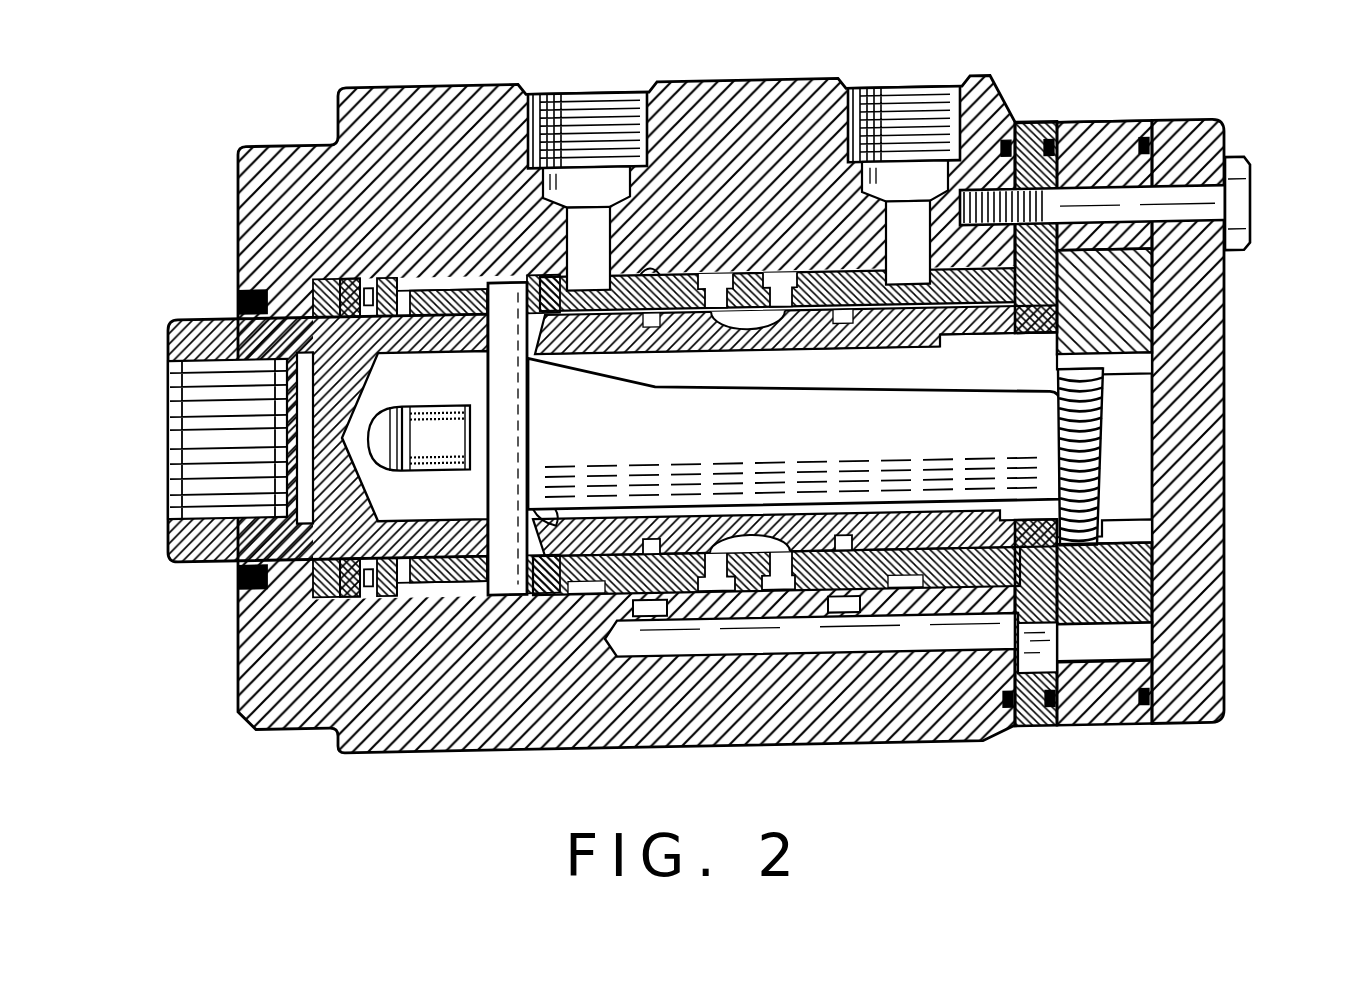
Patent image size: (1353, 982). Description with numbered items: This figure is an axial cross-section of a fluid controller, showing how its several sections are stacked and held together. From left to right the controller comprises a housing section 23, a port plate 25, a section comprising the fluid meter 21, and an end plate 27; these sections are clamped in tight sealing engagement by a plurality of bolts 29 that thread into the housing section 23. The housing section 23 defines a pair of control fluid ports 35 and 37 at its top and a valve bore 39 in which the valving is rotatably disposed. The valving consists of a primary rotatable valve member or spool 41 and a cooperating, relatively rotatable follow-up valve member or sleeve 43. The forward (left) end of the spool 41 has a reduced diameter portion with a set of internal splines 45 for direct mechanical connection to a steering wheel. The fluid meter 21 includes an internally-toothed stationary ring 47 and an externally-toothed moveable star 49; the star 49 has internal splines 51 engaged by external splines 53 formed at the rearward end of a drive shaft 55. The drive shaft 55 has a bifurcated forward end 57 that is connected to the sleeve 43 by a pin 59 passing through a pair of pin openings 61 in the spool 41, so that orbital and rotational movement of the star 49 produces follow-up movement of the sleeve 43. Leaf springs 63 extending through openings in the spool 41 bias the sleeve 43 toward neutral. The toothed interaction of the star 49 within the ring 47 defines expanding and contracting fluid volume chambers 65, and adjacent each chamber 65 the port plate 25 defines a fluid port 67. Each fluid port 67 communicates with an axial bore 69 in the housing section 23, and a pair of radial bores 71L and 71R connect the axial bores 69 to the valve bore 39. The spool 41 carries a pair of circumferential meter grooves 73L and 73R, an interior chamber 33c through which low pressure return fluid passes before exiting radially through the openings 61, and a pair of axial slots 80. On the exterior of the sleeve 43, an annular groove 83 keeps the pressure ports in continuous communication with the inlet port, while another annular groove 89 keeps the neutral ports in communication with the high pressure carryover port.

The fluid meter 21 is at (1110, 121).
The housing section 23 is at (425, 93).
The port plate 25 is at (1025, 147).
The end plate 27 is at (1213, 419).
The bolts 29 is at (1245, 206).
The interior chamber 33c is at (998, 362).
The control fluid port 35 is at (940, 110).
The control fluid port 37 is at (625, 114).
The valve bore 39 is at (646, 272).
The primary rotatable valve member (spool) 41 is at (868, 334).
The follow-up valve member (sleeve) 43 is at (685, 331).
The internal splines 45 is at (195, 431).
The internally-toothed stationary ring 47 is at (1105, 709).
The externally-toothed moveable star 49 is at (1130, 591).
The internal splines 51 is at (1130, 364).
The external splines 53 is at (1070, 473).
The drive shaft 55 is at (740, 404).
The bifurcated forward end 57 is at (505, 444).
The pin 59 is at (520, 353).
The pin openings 61 is at (550, 518).
The leaf springs 63 is at (440, 466).
The fluid volume chambers 65 is at (1138, 657).
The fluid port 67 is at (1030, 662).
The axial bores 69 is at (770, 637).
The radial bore 71L is at (657, 615).
The radial bore 71R is at (845, 616).
The circumferential meter groove 73L is at (650, 535).
The circumferential meter groove 73R is at (840, 541).
The axial slots 80 is at (752, 320).
The annular groove 83 is at (722, 279).
The annular groove 89 is at (790, 283).